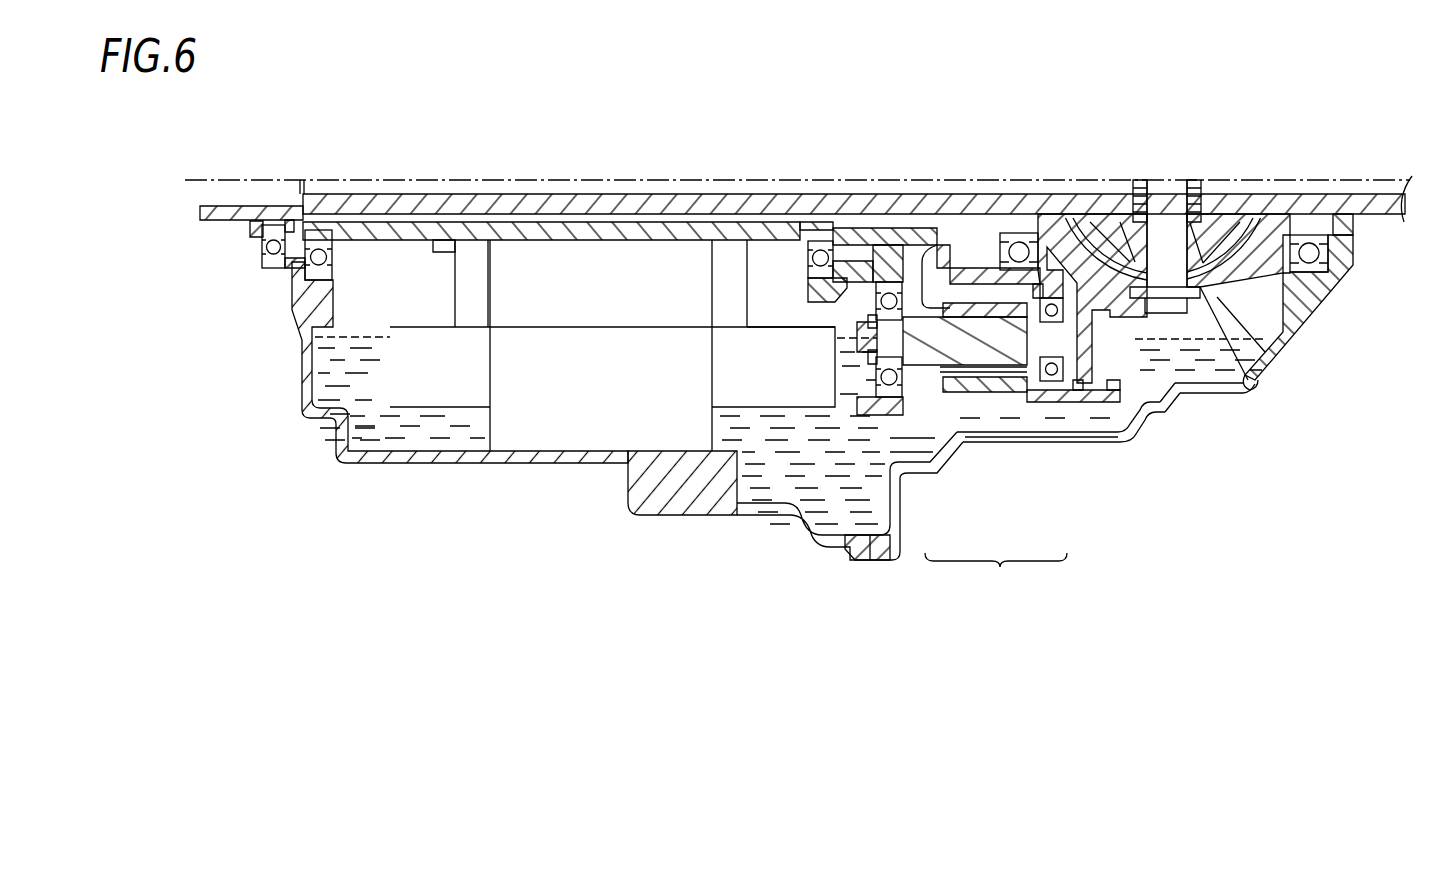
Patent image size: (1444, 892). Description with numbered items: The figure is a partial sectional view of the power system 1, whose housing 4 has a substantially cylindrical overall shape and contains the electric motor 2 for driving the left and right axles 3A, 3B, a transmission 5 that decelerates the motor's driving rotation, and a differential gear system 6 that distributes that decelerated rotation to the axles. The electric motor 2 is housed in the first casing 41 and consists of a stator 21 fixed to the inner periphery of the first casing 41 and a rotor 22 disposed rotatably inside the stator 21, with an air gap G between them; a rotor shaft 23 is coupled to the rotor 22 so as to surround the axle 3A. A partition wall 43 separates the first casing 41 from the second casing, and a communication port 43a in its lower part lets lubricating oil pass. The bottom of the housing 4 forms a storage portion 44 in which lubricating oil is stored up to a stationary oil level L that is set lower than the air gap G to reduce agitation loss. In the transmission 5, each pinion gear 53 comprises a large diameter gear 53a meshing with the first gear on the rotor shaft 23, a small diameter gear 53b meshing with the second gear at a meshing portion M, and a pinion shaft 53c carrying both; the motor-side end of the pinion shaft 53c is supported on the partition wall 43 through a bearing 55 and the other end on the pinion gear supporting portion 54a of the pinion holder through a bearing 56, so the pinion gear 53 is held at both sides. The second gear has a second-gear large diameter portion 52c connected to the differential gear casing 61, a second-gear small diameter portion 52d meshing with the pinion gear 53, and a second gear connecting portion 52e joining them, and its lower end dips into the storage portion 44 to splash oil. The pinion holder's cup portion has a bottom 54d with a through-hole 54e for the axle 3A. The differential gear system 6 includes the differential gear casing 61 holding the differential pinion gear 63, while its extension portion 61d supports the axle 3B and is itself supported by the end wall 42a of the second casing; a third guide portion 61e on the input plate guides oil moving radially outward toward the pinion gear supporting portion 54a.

The power system 1 is at (1312, 492).
The electric motor 2 is at (463, 381).
The stator 21 is at (538, 392).
The rotor 22 is at (528, 284).
The rotor shaft 23 is at (469, 247).
The left axle 3A is at (213, 224).
The right axle 3B is at (1378, 221).
The housing 4 is at (656, 516).
The first casing 41 is at (680, 516).
The end wall of the second casing 42a is at (1274, 367).
The partition wall 43 is at (897, 480).
The communication port 43a is at (870, 522).
The storage portion 44 is at (770, 478).
The transmission 5 is at (978, 402).
The second-gear large diameter portion 52c is at (1117, 420).
The second-gear small diameter portion 52d is at (975, 382).
The second gear connecting portion 52e is at (1060, 392).
The pinion gear 53 is at (996, 575).
The large diameter gear 53a is at (905, 470).
The small diameter gear 53b is at (1015, 442).
The pinion shaft 53c is at (952, 442).
The pinion gear supporting portion 54a is at (1090, 402).
The bottom of the cup portion 54d is at (915, 223).
The through-hole 54e is at (943, 223).
The bearing 55 is at (866, 380).
The bearing 56 is at (1163, 393).
The differential gear system 6 is at (1250, 281).
The differential gear casing 61 is at (1262, 381).
The extension portion 61d is at (1335, 226).
The third guide portion 61e is at (1237, 378).
The differential pinion gear 63 is at (1290, 336).
The stationary oil level L is at (345, 335).
The meshing portion M is at (1033, 378).
The air gap G is at (575, 330).